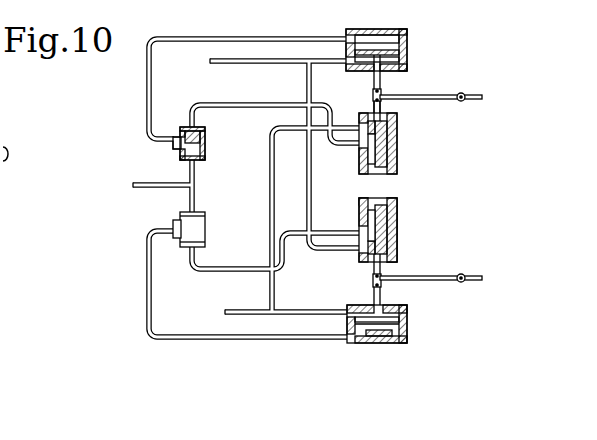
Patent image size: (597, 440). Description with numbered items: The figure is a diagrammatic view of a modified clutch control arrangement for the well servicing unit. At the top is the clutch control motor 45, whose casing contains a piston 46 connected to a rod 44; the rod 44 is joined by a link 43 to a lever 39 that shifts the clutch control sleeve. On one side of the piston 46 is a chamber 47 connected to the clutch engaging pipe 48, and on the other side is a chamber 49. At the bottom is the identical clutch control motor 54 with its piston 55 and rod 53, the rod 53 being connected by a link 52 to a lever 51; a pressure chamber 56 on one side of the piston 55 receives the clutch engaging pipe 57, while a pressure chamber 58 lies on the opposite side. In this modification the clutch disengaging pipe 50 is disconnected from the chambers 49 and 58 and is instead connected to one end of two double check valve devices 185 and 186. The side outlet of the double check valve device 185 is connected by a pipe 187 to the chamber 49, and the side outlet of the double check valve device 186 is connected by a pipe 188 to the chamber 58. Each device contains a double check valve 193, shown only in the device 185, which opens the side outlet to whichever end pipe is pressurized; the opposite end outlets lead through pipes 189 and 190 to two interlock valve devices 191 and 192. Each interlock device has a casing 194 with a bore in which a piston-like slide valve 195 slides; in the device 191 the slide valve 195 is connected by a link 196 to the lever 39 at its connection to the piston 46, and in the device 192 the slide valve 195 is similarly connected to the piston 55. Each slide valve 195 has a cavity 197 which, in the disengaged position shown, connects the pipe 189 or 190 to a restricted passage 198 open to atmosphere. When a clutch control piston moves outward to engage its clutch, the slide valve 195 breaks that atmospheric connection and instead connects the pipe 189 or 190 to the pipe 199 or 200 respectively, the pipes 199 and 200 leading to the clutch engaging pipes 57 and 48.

The lever 39 is at (440, 85).
The link 43 is at (373, 94).
The rod 44 is at (373, 81).
The clutch control motor 45 is at (353, 29).
The piston 46 is at (394, 53).
The chamber 47 is at (398, 62).
The clutch engaging pipe 48 is at (219, 66).
The chamber 49 is at (401, 29).
The clutch disengaging pipe 50 is at (141, 182).
The lever 51 is at (442, 264).
The link 52 is at (374, 283).
The rod 53 is at (374, 296).
The clutch control motor 54 is at (348, 345).
The piston 55 is at (398, 322).
The pressure chamber 56 is at (393, 308).
The clutch engaging pipe 57 is at (232, 311).
The pressure chamber 58 is at (393, 344).
The double check valve device 185 is at (205, 152).
The double check valve device 186 is at (205, 239).
The pipe 187 is at (147, 88).
The pipe 188 is at (147, 275).
The pipe 189 is at (266, 86).
The pipe 190 is at (203, 272).
The interlock valve device 191 is at (400, 137).
The interlock valve device 192 is at (400, 200).
The double check valve 193 is at (182, 132).
The casing 194 is at (393, 172).
The slide valve 195 is at (399, 157).
The link 196 is at (386, 106).
The cavity 197 is at (371, 153).
The passage 198 is at (362, 197).
The pipe 199 is at (271, 195).
The pipe 200 is at (305, 176).